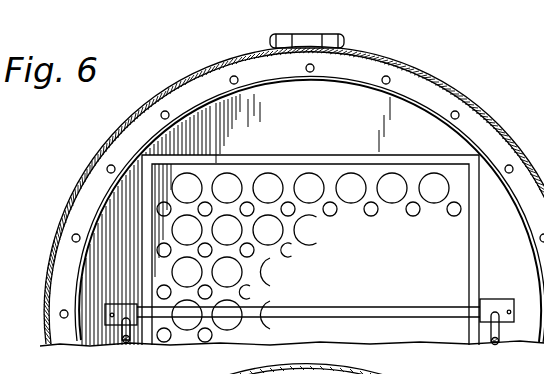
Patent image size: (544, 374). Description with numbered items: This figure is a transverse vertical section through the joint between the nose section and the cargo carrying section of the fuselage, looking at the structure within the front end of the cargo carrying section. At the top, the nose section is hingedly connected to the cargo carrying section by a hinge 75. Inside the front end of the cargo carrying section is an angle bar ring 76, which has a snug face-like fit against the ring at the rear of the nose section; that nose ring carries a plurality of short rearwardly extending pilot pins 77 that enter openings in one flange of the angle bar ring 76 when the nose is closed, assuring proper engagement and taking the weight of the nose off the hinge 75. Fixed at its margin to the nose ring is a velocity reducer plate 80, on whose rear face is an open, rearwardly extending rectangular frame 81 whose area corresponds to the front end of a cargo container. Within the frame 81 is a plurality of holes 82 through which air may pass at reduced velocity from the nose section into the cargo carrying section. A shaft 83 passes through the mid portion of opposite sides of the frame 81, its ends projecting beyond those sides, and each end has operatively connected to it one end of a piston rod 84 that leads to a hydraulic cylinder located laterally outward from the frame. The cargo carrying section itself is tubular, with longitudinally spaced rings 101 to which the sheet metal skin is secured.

The hinge 75 is at (345, 42).
The angle bar ring 76 is at (353, 78).
The pilot pins 77 is at (258, 90).
The velocity reducer plate 80 is at (444, 132).
The rectangular frame 81 is at (282, 155).
The holes 82 is at (352, 172).
The shaft 83 is at (304, 312).
The piston rod 84 is at (135, 336).
The rings 101 is at (224, 373).